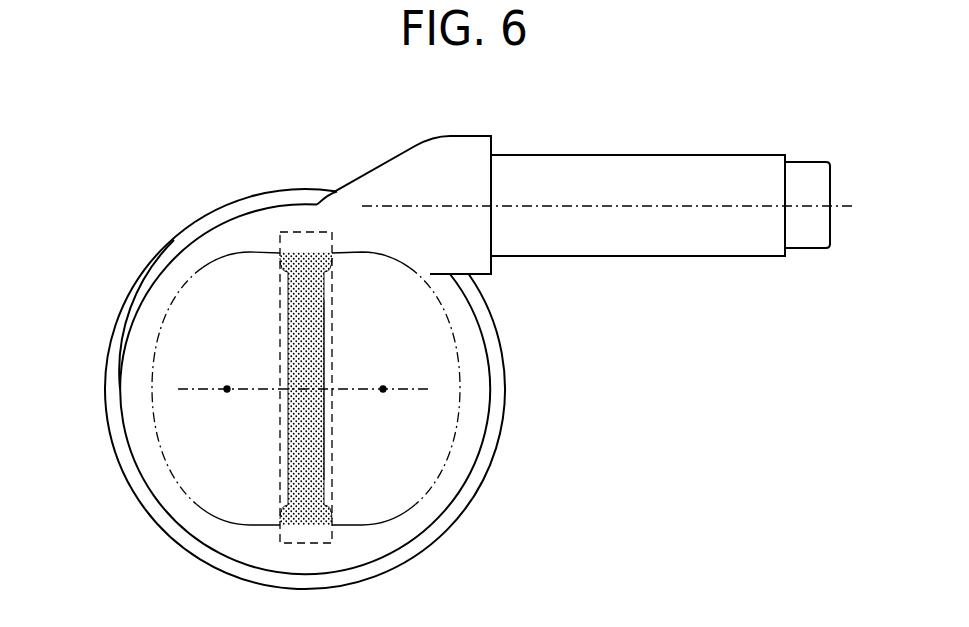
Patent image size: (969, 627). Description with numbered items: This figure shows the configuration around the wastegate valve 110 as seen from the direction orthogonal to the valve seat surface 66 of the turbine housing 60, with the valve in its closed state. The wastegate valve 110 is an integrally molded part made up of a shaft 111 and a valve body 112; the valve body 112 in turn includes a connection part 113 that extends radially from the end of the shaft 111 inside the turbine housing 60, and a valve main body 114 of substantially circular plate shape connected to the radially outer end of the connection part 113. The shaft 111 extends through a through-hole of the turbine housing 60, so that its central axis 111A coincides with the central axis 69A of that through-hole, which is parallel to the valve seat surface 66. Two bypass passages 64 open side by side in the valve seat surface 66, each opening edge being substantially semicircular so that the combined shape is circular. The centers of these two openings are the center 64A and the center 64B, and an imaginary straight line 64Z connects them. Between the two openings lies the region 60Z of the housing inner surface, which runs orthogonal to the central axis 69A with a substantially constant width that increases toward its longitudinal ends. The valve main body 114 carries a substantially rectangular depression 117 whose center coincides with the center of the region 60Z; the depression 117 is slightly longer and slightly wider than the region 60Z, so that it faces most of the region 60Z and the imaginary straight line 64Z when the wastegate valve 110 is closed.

The turbine housing 60 is at (505, 400).
The valve seat surface 66 is at (405, 550).
The valve main body 114 is at (140, 308).
The connection part 113 is at (367, 170).
The valve body 112 is at (391, 152).
The wastegate valve 110 is at (608, 207).
The shaft 111 is at (694, 155).
The central axis of the shaft 111A is at (657, 207).
The central axis of the through-hole 69A is at (750, 206).
The depression 117 is at (287, 432).
The region 60Z is at (323, 408).
The bypass passage 64 is at (235, 262).
The imaginary straight line 64Z is at (422, 388).
The center 64A is at (247, 366).
The center 64B is at (382, 388).